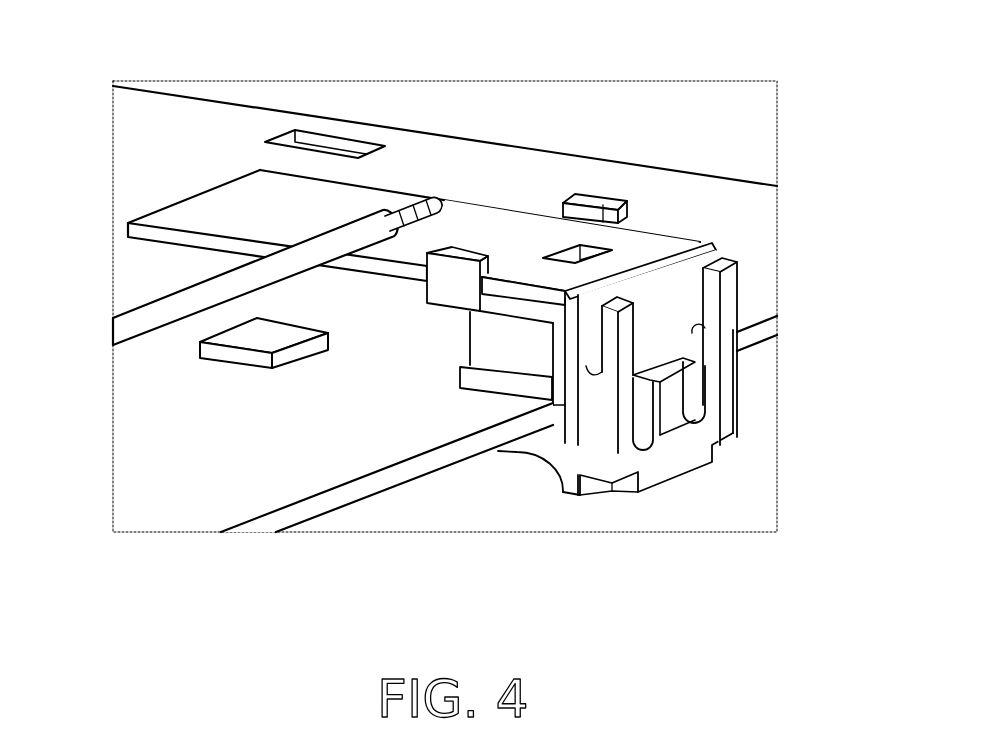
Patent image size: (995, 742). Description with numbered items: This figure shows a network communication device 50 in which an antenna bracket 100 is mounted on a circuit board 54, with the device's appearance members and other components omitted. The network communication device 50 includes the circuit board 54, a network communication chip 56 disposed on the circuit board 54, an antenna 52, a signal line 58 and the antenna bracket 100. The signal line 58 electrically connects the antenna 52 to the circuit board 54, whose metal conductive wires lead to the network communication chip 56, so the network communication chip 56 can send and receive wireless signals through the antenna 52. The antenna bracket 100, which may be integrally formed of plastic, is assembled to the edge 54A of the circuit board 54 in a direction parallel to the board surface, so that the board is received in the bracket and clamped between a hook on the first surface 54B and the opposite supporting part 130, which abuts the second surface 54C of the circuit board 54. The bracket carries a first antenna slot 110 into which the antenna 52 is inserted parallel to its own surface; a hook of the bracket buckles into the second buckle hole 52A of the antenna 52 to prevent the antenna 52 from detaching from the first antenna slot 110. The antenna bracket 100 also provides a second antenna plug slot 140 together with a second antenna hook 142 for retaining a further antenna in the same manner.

The network communication device 50 is at (744, 645).
The antenna 52 is at (386, 196).
The second buckle hole 52A is at (609, 242).
The circuit board 54 is at (727, 187).
The edge 54A is at (397, 475).
The first surface 54B is at (312, 445).
The second surface 54C is at (312, 478).
The network communication chip 56 is at (295, 353).
The signal line 58 is at (150, 312).
The antenna bracket 100 is at (667, 497).
The first antenna slot 110 is at (547, 210).
The opposite supporting part 130 is at (515, 450).
The second antenna plug slot 140 is at (692, 302).
The second antenna hook 142 is at (676, 388).